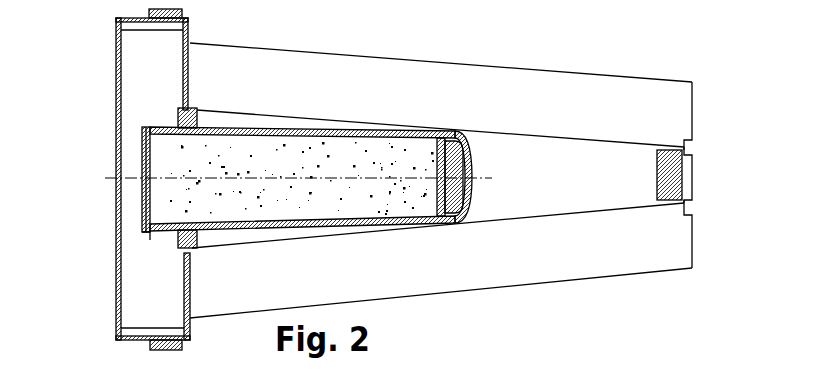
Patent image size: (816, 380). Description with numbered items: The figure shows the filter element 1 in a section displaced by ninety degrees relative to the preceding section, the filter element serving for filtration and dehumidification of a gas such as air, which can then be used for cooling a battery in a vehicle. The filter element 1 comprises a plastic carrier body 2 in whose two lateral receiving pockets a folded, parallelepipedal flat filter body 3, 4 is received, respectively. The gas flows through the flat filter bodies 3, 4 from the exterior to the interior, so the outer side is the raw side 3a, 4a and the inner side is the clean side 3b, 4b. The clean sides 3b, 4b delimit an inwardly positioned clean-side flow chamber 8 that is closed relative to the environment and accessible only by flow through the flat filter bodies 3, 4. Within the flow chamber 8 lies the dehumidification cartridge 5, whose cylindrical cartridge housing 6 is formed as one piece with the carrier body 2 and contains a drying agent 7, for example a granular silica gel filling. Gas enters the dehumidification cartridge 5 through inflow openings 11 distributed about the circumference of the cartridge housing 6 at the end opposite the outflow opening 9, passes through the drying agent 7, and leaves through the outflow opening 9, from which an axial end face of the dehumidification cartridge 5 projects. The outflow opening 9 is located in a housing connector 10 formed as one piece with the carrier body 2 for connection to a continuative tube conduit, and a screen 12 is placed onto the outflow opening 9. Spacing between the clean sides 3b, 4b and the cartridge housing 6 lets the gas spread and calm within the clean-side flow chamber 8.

The filter element 1 is at (512, 53).
The carrier body 2 is at (188, 23).
The flat filter body 3 is at (590, 78).
The raw side 3a is at (623, 78).
The clean side 3b is at (590, 140).
The flat filter body 4 is at (595, 268).
The raw side 4a is at (633, 273).
The clean side 4b is at (583, 215).
The dehumidification cartridge 5 is at (345, 130).
The cartridge housing 6 is at (275, 242).
The drying agent 7 is at (343, 205).
The clean-side flow chamber 8 is at (316, 174).
The outflow opening 9 is at (143, 245).
The housing connector 10 is at (122, 22).
The inflow openings 11 is at (440, 157).
The screen 12 is at (143, 207).